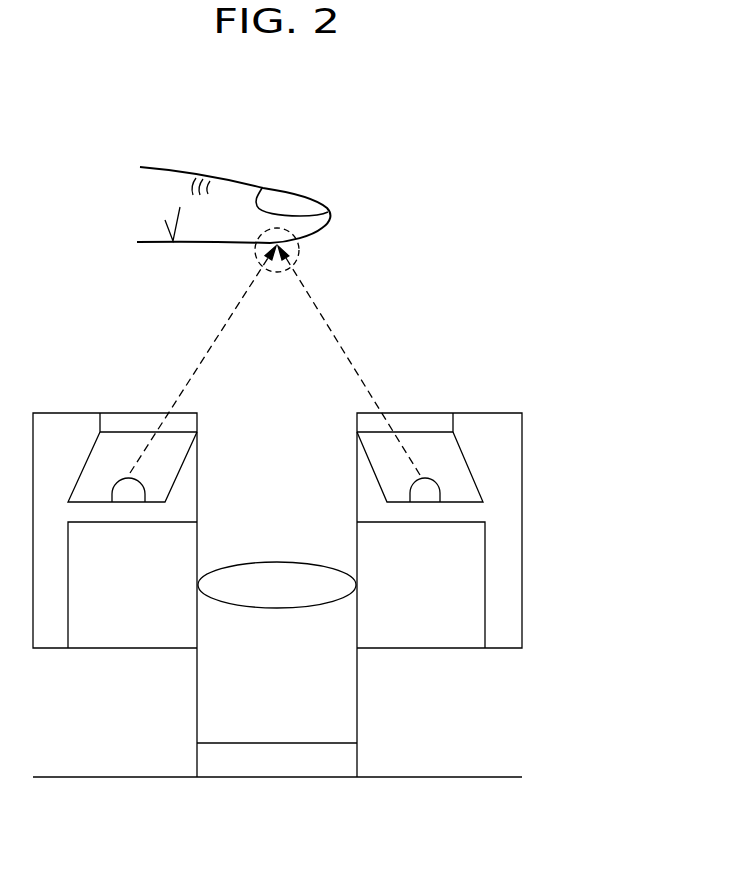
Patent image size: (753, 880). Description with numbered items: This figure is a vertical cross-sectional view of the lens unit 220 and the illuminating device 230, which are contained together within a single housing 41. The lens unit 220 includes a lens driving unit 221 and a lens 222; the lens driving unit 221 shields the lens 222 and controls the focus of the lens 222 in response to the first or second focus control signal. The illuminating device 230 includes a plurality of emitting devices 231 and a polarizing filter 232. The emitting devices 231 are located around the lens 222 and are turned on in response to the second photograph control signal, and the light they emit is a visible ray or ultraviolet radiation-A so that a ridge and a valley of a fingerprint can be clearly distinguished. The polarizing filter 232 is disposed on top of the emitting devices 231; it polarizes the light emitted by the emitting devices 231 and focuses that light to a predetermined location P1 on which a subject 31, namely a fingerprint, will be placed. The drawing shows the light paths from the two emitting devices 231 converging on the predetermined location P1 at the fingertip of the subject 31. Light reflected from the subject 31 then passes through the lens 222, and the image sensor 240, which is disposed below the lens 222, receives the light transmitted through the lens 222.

The subject 31 is at (228, 170).
The predetermined location P1 is at (300, 247).
The housing 41 is at (522, 513).
The illuminating device 230 is at (275, 388).
The emitting devices 231 is at (113, 489).
The polarizing filter 232 is at (152, 422).
The lens unit 220 is at (343, 646).
The lens driving unit 221 is at (113, 633).
The lens 222 is at (227, 603).
The image sensor 240 is at (273, 768).